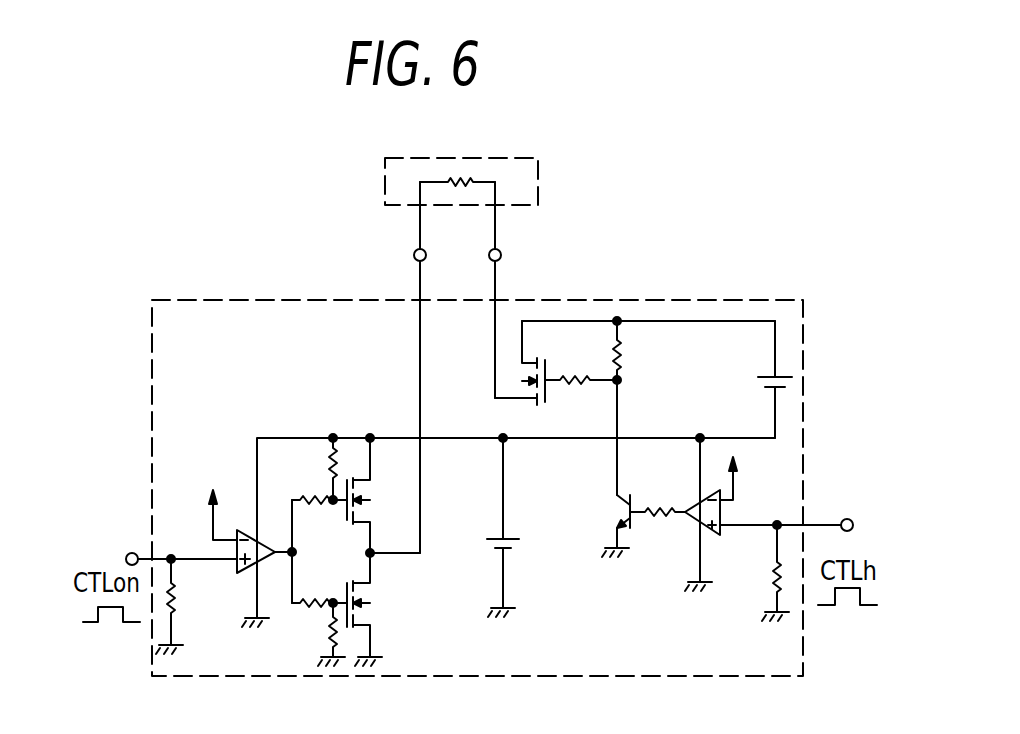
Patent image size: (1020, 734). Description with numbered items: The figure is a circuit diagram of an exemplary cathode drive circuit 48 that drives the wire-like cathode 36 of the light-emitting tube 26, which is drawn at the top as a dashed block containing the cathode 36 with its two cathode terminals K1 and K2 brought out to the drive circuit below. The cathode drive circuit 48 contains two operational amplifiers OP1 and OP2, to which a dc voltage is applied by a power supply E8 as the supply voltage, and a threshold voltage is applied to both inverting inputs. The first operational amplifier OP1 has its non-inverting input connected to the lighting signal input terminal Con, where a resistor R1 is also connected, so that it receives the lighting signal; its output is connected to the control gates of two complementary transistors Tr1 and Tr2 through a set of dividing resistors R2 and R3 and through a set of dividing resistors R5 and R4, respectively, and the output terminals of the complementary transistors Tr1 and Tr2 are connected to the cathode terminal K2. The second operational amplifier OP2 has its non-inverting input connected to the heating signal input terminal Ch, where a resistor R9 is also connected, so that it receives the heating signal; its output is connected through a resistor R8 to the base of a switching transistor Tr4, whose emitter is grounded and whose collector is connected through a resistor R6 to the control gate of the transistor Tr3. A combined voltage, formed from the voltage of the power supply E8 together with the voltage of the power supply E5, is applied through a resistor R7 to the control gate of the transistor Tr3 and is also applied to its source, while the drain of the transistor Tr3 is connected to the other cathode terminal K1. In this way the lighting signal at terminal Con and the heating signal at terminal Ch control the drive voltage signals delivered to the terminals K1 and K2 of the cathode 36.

The light-emitting tube 26 is at (538, 185).
The cathode 36 is at (452, 174).
The cathode drive circuit 48 is at (628, 677).
The cathode terminal K1 is at (511, 290).
The cathode terminal K2 is at (400, 367).
The operational amplifier OP1 is at (237, 565).
The operational amplifier OP2 is at (687, 517).
The resistor R1 is at (177, 606).
The dividing resistor R2 is at (319, 590).
The dividing resistor R3 is at (319, 634).
The dividing resistor R4 is at (314, 486).
The dividing resistor R5 is at (312, 469).
The resistor R6 is at (581, 365).
The resistor R7 is at (635, 350).
The resistor R8 is at (657, 497).
The resistor R9 is at (763, 573).
The complementary transistor Tr1 is at (378, 609).
The complementary transistor Tr2 is at (379, 495).
The transistor Tr3 is at (541, 378).
The switching transistor Tr4 is at (598, 497).
The power supply E5 is at (759, 379).
The power supply E8 is at (504, 527).
The lighting signal input terminal Con is at (172, 541).
The heating signal input terminal Ch is at (789, 509).